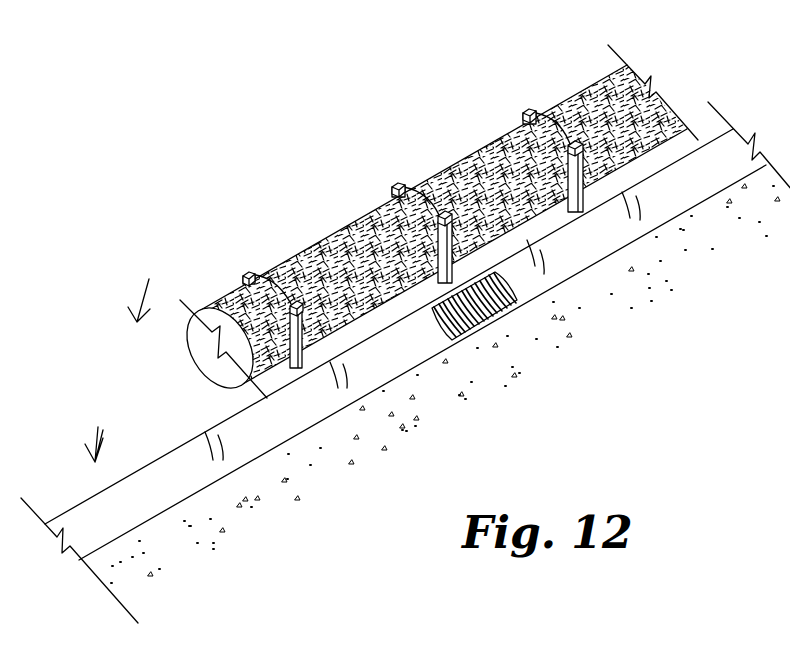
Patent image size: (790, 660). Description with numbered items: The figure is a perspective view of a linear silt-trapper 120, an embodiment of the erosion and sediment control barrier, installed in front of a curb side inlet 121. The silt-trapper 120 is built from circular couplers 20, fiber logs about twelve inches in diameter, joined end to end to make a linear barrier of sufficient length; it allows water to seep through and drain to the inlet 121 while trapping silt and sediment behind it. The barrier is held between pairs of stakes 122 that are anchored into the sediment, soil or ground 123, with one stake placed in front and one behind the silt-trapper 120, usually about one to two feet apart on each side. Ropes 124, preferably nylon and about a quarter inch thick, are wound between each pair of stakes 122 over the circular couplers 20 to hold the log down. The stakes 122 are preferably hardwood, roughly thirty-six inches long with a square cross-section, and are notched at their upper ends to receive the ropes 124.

The linear silt-trapper 120 is at (327, 86).
The circular coupler 20 is at (569, 100).
The curb side inlet 121 is at (488, 320).
The stakes 122 is at (243, 268).
The ground 123 is at (140, 413).
The ropes 124 is at (424, 182).